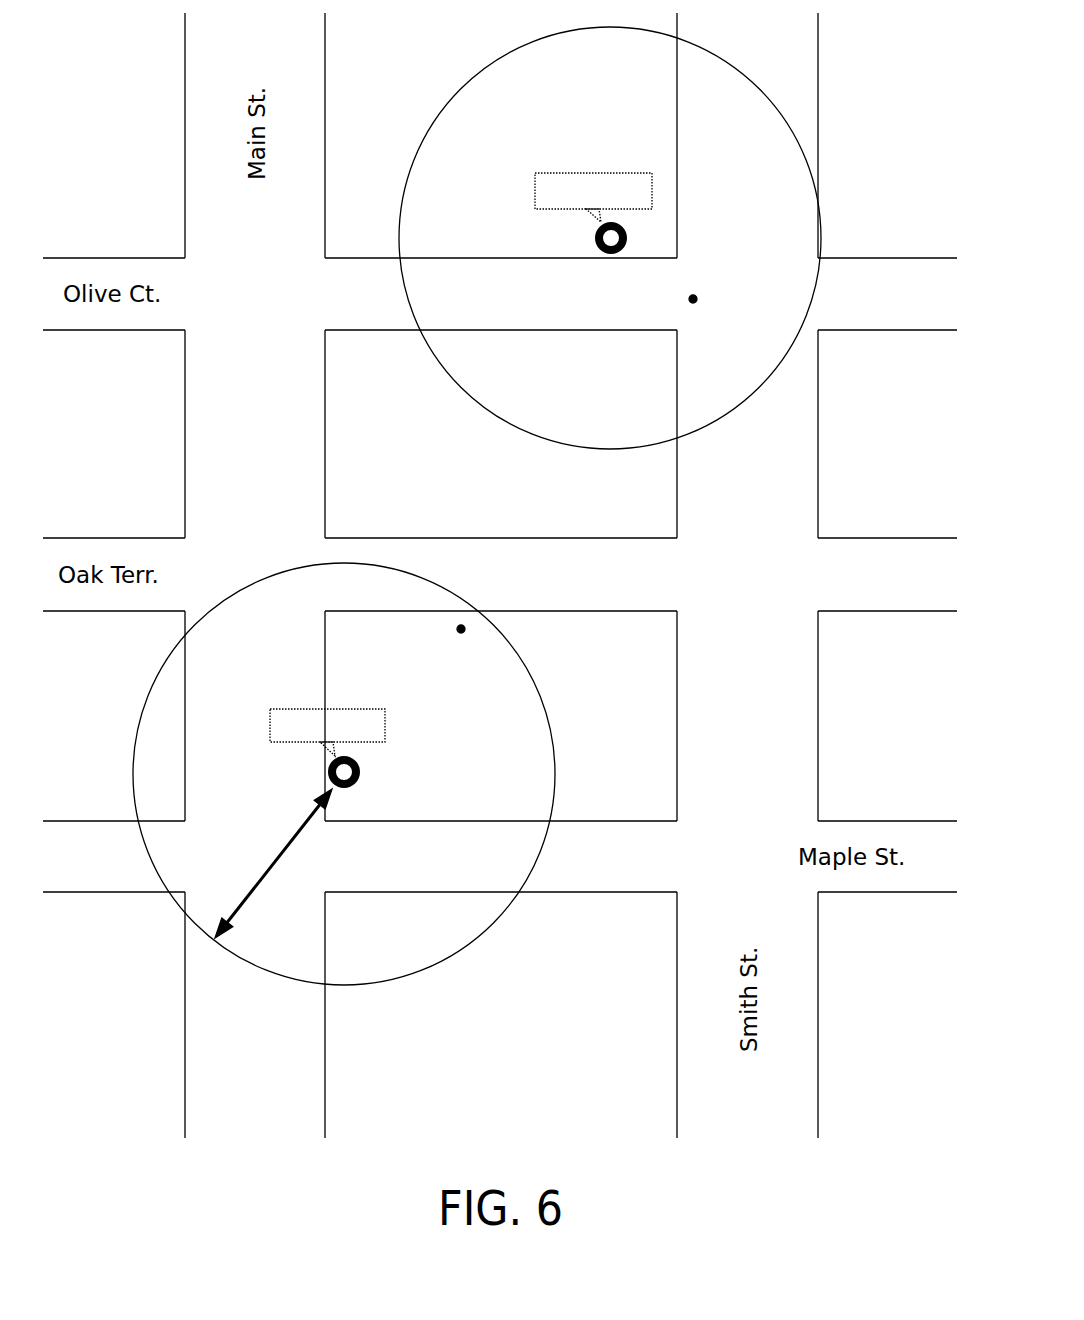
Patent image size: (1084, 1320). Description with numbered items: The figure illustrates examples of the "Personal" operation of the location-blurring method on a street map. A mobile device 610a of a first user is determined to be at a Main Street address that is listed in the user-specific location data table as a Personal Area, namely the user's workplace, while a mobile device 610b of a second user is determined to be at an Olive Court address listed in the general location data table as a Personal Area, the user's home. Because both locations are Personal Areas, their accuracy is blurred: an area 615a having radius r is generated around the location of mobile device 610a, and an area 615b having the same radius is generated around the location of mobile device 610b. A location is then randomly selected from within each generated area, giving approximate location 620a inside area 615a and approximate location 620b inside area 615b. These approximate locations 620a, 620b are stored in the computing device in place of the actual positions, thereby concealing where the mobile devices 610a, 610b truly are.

The mobile device of User 1 610a is at (361, 773).
The mobile device of User 2 610b is at (598, 246).
The generated area 615a is at (538, 857).
The generated area 615b is at (407, 296).
The approximate location 620a is at (465, 623).
The approximate location 620b is at (699, 295).